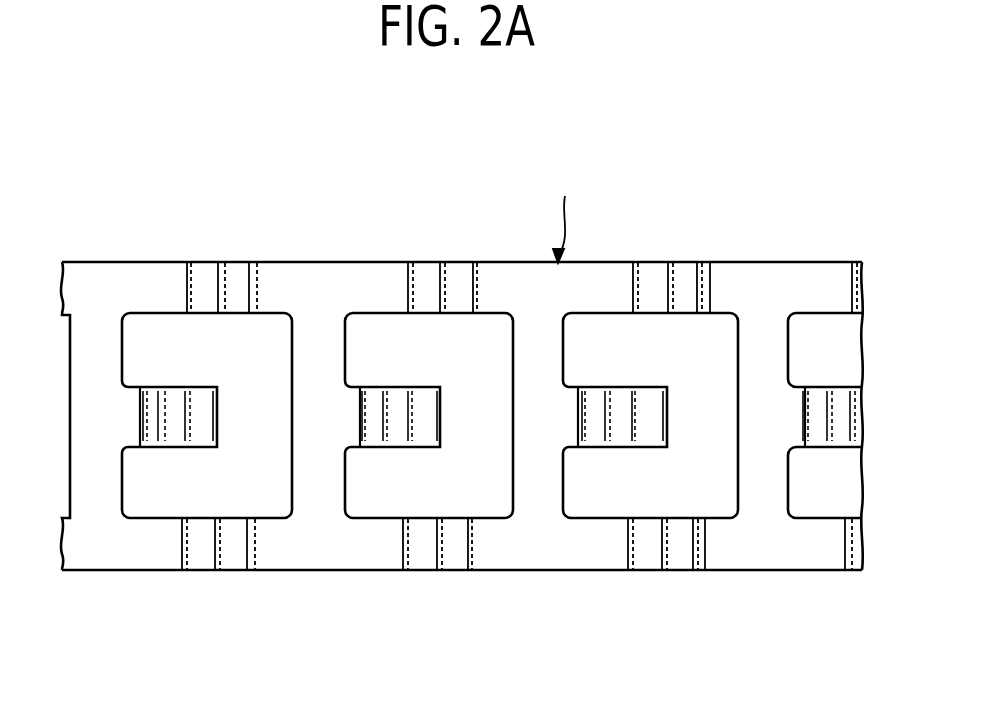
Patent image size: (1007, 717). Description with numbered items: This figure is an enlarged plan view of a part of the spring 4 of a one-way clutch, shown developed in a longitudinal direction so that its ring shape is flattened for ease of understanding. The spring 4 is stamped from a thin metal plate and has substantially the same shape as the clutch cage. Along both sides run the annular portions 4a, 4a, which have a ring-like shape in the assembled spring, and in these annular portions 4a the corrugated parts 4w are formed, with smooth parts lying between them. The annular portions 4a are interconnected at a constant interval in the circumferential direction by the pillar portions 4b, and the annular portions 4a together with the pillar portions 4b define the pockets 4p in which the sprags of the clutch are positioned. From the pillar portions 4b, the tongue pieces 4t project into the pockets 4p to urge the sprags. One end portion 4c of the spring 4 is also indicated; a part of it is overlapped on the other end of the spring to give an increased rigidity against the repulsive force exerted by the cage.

The spring 4 is at (599, 262).
The annular portion 4a is at (377, 275).
The pillar portion 4b is at (535, 423).
The one end portion 4c is at (566, 215).
The pocket 4p is at (157, 330).
The tongue piece 4t is at (385, 390).
The corrugated part 4w is at (238, 283).